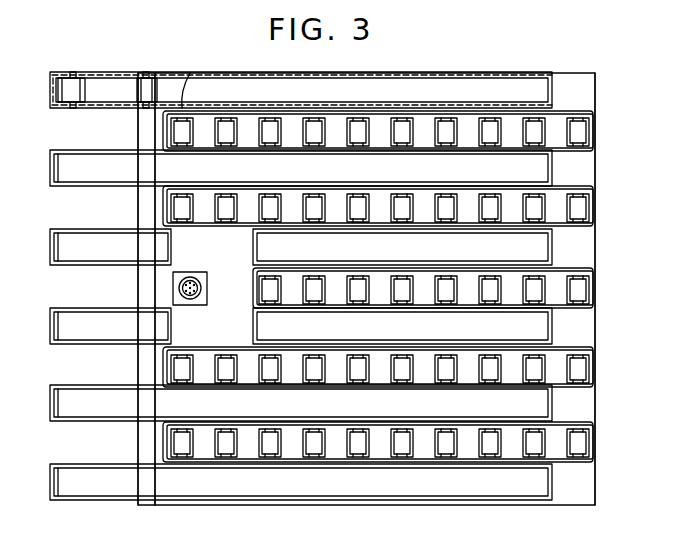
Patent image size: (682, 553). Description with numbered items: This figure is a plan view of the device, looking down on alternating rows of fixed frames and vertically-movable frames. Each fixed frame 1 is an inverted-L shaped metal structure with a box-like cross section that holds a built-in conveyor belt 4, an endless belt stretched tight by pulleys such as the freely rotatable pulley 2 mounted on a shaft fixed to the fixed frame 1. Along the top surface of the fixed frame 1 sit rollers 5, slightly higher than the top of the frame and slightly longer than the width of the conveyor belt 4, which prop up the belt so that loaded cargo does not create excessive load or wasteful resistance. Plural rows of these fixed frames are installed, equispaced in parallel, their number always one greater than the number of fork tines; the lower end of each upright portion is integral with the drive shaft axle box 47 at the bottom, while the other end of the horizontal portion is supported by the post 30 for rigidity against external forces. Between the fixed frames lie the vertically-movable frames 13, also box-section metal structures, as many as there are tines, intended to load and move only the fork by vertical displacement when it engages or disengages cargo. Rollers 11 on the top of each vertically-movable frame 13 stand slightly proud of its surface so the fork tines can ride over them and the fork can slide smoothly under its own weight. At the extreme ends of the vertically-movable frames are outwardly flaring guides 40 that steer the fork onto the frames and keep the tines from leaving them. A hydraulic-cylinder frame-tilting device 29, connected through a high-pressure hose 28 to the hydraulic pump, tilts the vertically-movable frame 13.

The fixed frame 1 is at (50, 88).
The pulley 2 is at (60, 73).
The conveyor belt 4 is at (540, 327).
The roller 5 is at (146, 72).
The roller 11 is at (583, 133).
The vertically-movable frame 13 is at (596, 152).
The high-pressure hose 28 is at (204, 290).
The vertically-movable frame-tilting device 29 is at (193, 278).
The post 30 is at (145, 208).
The guide 40 is at (593, 115).
The drive shaft axle box 47 is at (586, 249).